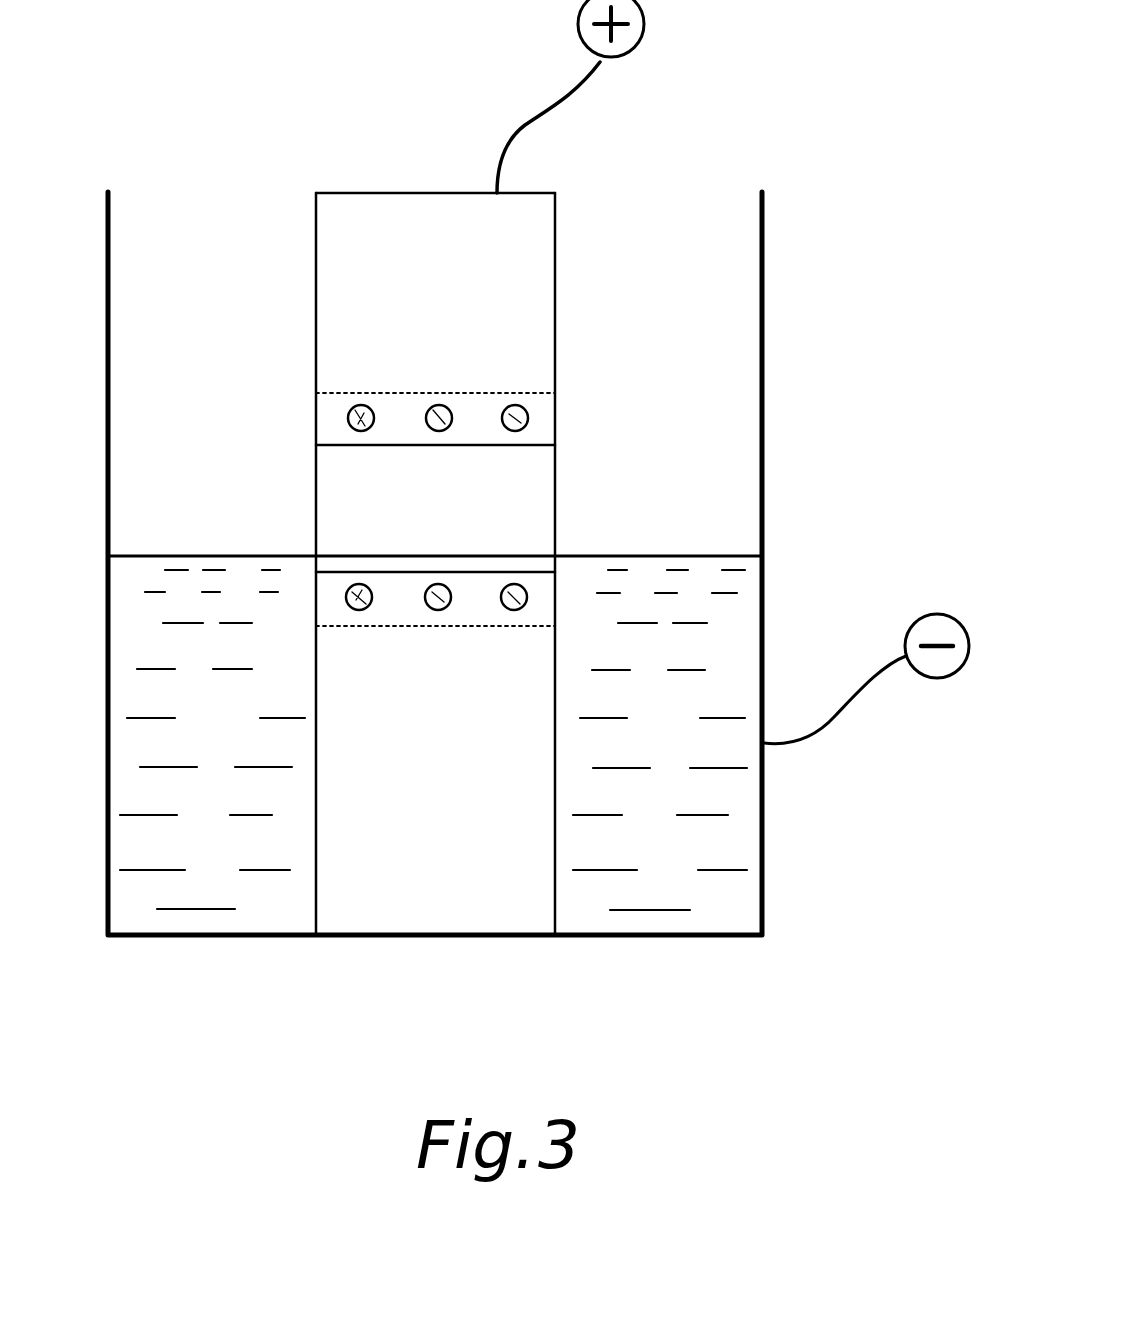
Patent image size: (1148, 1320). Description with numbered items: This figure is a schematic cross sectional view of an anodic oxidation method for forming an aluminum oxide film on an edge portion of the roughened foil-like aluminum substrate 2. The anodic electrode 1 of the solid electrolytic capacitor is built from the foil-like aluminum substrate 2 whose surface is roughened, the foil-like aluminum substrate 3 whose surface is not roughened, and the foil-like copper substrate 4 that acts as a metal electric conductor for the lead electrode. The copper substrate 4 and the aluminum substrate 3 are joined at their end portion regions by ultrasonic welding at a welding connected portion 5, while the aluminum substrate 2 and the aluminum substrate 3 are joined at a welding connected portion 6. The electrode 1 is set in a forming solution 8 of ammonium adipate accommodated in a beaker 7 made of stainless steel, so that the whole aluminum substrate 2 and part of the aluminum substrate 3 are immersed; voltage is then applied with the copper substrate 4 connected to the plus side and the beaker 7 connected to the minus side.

The anodic electrode 1 is at (602, 184).
The foil-like aluminum substrate 2 is at (468, 895).
The foil-like aluminum substrate 3 is at (366, 483).
The foil-like copper substrate 4 is at (333, 237).
The welding connected portion 5 is at (358, 406).
The welding connected portion 6 is at (514, 585).
The beaker 7 is at (806, 295).
The forming solution 8 is at (236, 723).